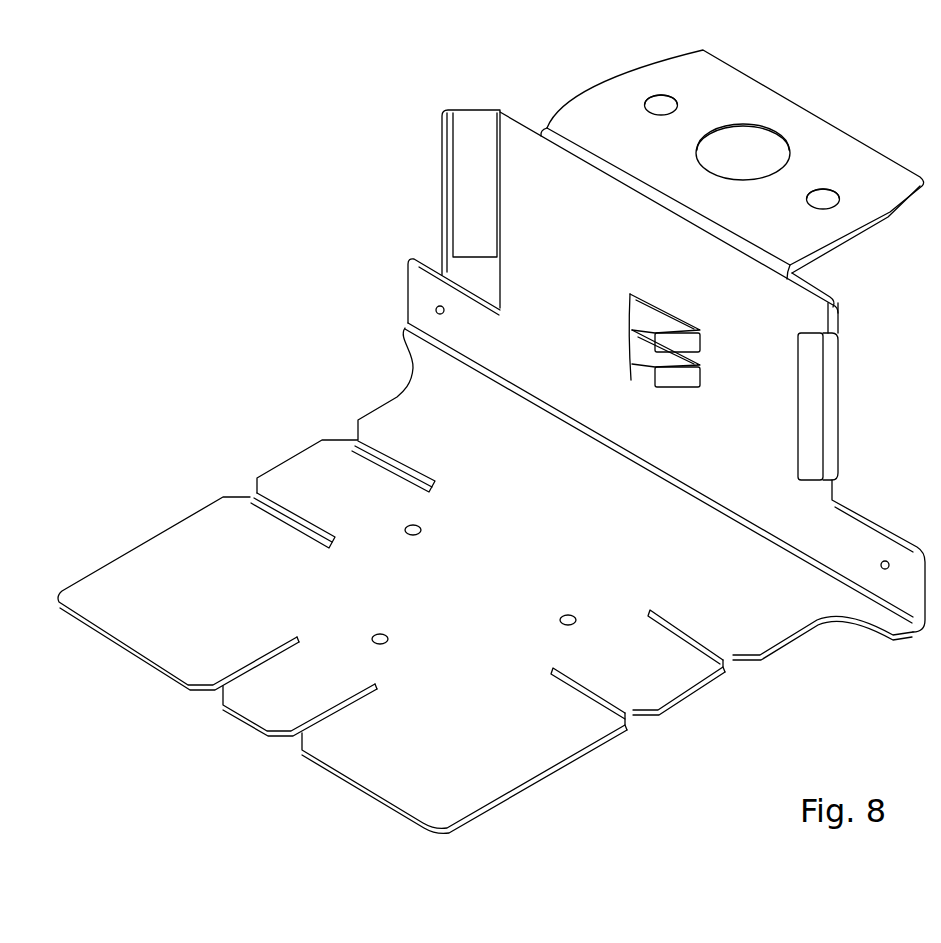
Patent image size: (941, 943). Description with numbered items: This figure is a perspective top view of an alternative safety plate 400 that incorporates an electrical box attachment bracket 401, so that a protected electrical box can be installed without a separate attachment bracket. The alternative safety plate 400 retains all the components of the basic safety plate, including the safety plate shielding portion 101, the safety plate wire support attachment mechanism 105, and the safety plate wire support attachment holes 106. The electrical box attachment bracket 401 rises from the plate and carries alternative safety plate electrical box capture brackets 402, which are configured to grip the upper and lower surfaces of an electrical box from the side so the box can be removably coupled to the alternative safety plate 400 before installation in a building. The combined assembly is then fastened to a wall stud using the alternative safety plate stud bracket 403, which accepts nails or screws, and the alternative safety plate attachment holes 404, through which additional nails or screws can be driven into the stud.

The alternative safety plate 400 is at (263, 230).
The electrical box attachment bracket 401 is at (522, 126).
The alternative safety plate electrical box capture brackets 402 is at (443, 187).
The alternative safety plate stud bracket 403 is at (800, 102).
The alternative safety plate attachment holes 404 is at (436, 309).
The safety plate shielding portion 101 is at (408, 405).
The safety plate wire support attachment mechanism 105 is at (293, 457).
The safety plate wire support attachment holes 106 is at (407, 537).